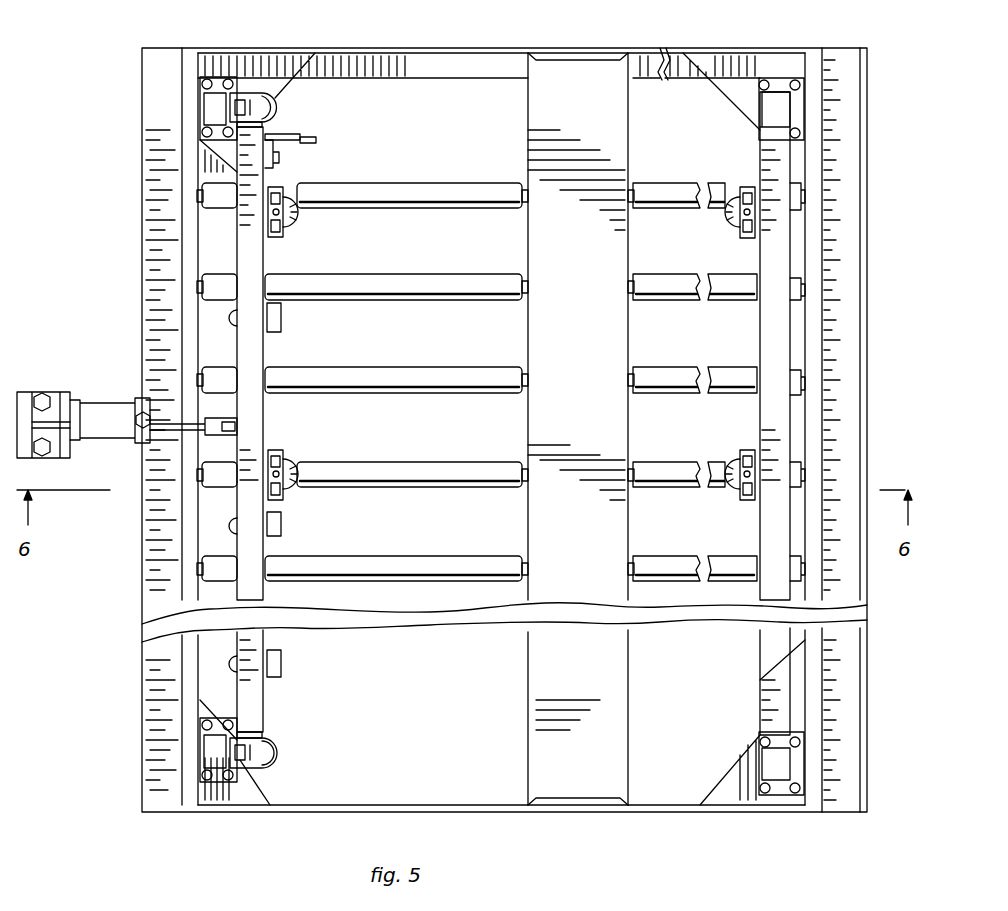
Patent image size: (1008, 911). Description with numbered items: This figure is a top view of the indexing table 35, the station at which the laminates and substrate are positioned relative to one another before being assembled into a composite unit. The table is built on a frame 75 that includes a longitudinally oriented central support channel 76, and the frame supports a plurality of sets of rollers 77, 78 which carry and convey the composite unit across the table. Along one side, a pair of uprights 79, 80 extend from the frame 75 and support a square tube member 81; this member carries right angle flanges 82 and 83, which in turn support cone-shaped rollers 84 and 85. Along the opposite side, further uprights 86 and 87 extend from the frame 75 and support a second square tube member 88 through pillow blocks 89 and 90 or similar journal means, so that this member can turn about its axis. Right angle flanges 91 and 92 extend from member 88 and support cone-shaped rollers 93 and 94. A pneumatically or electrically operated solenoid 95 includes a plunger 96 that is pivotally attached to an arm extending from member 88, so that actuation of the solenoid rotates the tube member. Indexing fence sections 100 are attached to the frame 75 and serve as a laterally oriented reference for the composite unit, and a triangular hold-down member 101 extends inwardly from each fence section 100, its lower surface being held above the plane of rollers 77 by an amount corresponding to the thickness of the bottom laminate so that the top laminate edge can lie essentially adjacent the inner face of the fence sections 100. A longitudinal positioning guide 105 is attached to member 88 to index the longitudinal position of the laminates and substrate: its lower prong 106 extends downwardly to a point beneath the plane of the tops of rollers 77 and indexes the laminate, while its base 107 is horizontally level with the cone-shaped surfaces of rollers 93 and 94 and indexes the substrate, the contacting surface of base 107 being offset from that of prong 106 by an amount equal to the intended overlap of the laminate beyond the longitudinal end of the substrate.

The indexing table 35 is at (104, 701).
The frame 75 is at (140, 226).
The central support channel 76 is at (528, 243).
The rollers 77 is at (463, 183).
The rollers 78 is at (665, 183).
The uprights 79 is at (778, 770).
The upper mounting plate 80 is at (768, 95).
The square tube member 81 is at (785, 265).
The right angle flange 82 is at (752, 450).
The right angle flange 83 is at (752, 190).
The cone-shaped roller 84 is at (736, 492).
The cone-shaped roller 85 is at (735, 220).
The upright 86 is at (205, 750).
The upright 87 is at (205, 96).
The square tube member 88 is at (266, 263).
The pillow block 89 is at (275, 750).
The pillow block 90 is at (273, 103).
The right angle flange 91 is at (284, 445).
The right angle flange 92 is at (278, 238).
The cone-shaped roller 93 is at (296, 467).
The cone-shaped roller 94 is at (300, 215).
The solenoid 95 is at (108, 400).
The plunger 96 is at (158, 436).
The indexing fence section 100 is at (270, 334).
The hold-down member 101 is at (282, 324).
The longitudinal positioning guide 105 is at (281, 147).
The lower prong 106 is at (313, 143).
The base 107 is at (295, 136).